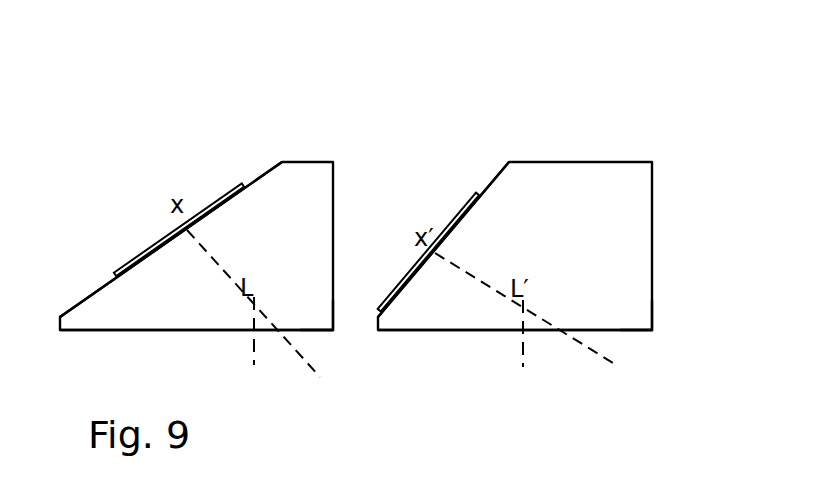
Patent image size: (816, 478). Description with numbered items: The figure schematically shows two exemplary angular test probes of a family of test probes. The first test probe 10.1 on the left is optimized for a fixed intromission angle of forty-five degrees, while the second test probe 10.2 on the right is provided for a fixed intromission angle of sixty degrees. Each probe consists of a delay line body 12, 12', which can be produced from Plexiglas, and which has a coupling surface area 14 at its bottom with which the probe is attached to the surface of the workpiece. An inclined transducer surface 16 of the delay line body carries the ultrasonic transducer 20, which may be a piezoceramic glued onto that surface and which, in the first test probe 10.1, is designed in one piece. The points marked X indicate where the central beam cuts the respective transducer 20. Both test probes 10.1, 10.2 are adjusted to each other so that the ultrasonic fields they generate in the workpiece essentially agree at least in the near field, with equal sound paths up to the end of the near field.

The first test probe 10.1 is at (305, 143).
The second test probe 10.2 is at (622, 158).
The delay line body 12 is at (349, 354).
The delay line body 12' is at (666, 332).
The coupling surface area 14 is at (113, 326).
The transducer surface 16 is at (112, 278).
The ultrasonic transducer 20 is at (207, 207).